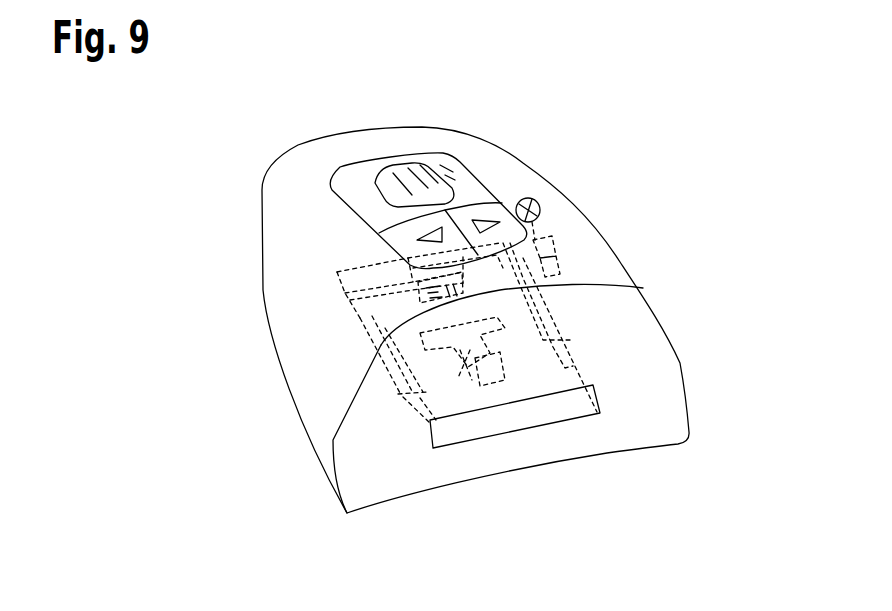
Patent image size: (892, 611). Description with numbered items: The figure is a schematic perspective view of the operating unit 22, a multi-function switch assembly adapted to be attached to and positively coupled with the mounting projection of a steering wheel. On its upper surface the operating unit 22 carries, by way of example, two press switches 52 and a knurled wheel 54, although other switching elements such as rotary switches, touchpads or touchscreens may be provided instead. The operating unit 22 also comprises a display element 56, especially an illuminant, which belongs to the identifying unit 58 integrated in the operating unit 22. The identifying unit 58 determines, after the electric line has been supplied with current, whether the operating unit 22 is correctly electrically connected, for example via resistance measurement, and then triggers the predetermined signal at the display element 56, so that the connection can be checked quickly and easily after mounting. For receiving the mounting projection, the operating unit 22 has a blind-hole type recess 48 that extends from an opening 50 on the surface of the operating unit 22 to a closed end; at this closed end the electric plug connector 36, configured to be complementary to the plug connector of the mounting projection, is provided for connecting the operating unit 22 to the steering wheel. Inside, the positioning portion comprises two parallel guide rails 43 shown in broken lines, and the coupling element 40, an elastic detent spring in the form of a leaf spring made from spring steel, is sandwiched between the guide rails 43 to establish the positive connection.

The operating unit 22 is at (480, 140).
The knurled wheel 54 is at (391, 188).
The press switches 52 is at (500, 210).
The display element 56 is at (543, 205).
The identifying unit 58 is at (562, 247).
The electric plug connector 36 is at (407, 317).
The guide rails 43 is at (560, 340).
The coupling element 40 is at (463, 380).
The recess 48 is at (510, 413).
The opening 50 is at (600, 413).